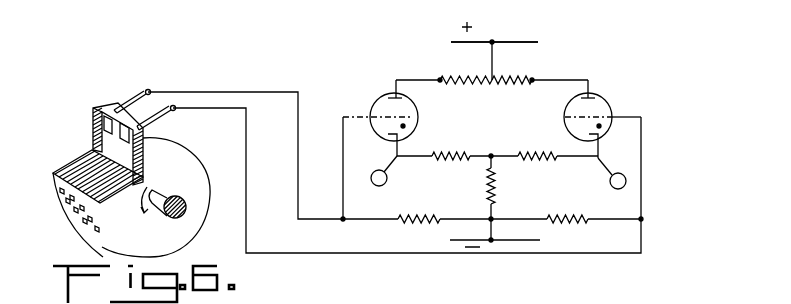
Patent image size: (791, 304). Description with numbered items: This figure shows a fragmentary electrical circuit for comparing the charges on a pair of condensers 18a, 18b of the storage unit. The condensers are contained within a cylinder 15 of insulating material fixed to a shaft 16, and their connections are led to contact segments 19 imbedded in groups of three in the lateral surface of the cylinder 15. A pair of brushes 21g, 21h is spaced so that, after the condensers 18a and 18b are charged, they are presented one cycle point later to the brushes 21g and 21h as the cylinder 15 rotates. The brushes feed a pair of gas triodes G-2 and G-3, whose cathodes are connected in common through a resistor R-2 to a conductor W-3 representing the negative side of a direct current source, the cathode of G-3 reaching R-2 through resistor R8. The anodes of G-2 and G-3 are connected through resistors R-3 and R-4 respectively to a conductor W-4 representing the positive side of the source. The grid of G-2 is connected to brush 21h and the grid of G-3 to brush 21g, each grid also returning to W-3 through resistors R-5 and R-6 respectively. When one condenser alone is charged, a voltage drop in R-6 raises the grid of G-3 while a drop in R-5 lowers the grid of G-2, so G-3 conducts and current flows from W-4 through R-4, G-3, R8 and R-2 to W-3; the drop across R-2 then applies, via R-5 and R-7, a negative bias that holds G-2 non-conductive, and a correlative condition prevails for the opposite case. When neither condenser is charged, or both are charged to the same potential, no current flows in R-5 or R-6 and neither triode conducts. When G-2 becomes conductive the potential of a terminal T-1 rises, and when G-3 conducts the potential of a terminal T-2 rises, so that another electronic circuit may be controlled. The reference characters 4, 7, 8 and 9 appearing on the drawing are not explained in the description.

The brush 21h is at (146, 90).
The brush 21g is at (177, 113).
The condenser 18b is at (93, 128).
The condenser 18a is at (141, 153).
The contact blade 4 is at (152, 149).
The cylinder 15 is at (200, 170).
The shaft 16 is at (185, 215).
The contact segments 19 is at (38, 233).
The perforation row 7 is at (92, 207).
The perforation row 8 is at (98, 220).
The perforation row 9 is at (108, 233).
The conductor W-4 is at (503, 31).
The conductor W-3 is at (514, 232).
The resistor R-3 is at (449, 84).
The resistor R-4 is at (510, 84).
The resistor R-7 is at (438, 160).
The resistor R8 is at (552, 160).
The resistor R-2 is at (496, 190).
The resistor R-5 is at (413, 210).
The resistor R-6 is at (550, 214).
The gas triode G-2 is at (418, 120).
The gas triode G-3 is at (566, 121).
The terminal T-1 is at (383, 186).
The terminal T-2 is at (626, 181).